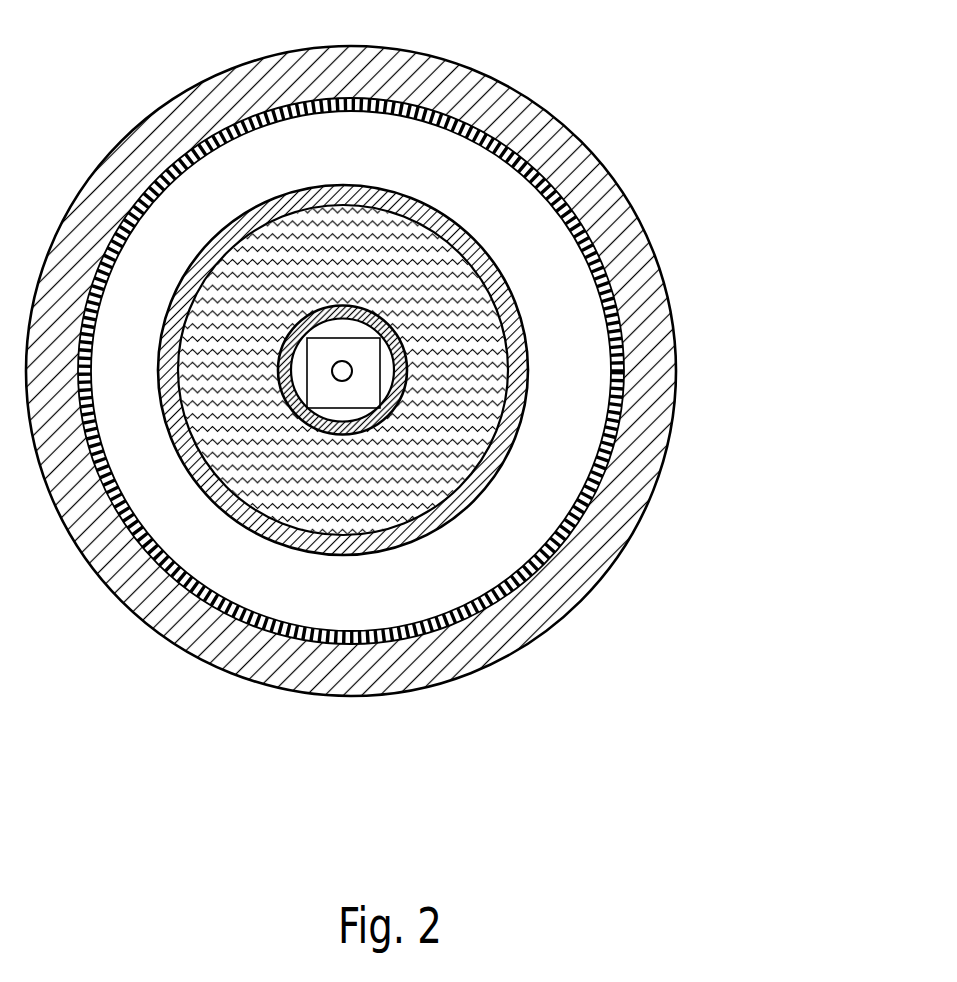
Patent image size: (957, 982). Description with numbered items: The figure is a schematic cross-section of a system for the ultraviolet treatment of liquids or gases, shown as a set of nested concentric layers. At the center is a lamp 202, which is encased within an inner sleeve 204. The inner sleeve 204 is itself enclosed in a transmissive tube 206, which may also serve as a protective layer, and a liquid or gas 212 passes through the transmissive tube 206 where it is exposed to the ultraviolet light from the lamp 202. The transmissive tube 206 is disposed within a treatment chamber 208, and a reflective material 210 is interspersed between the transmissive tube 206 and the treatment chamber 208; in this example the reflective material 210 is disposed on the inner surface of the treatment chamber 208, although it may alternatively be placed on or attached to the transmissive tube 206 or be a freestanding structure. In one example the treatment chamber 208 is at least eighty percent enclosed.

The lamp 202 is at (347, 395).
The inner sleeve 204 is at (332, 433).
The transmissive tube 206 is at (518, 383).
The treatment chamber 208 is at (500, 100).
The reflective material 210 is at (603, 205).
The liquid or gas 212 is at (452, 453).